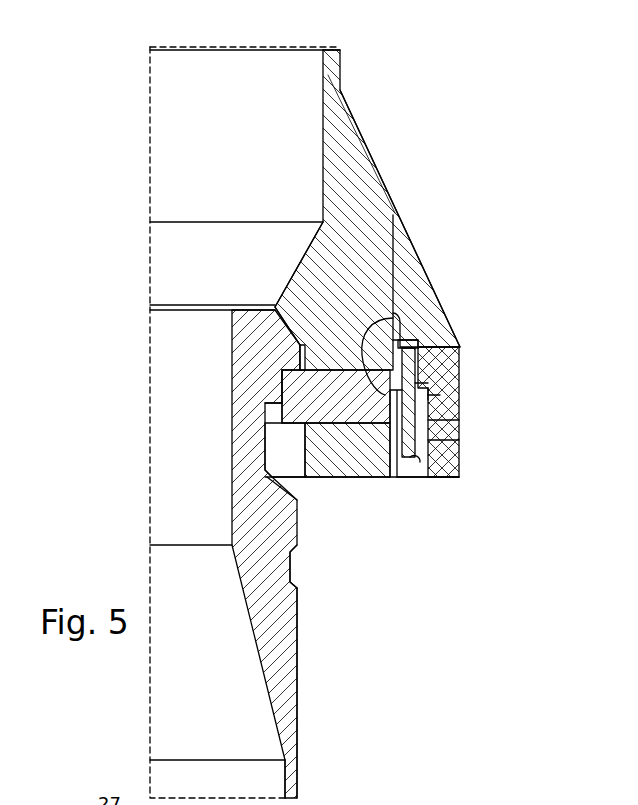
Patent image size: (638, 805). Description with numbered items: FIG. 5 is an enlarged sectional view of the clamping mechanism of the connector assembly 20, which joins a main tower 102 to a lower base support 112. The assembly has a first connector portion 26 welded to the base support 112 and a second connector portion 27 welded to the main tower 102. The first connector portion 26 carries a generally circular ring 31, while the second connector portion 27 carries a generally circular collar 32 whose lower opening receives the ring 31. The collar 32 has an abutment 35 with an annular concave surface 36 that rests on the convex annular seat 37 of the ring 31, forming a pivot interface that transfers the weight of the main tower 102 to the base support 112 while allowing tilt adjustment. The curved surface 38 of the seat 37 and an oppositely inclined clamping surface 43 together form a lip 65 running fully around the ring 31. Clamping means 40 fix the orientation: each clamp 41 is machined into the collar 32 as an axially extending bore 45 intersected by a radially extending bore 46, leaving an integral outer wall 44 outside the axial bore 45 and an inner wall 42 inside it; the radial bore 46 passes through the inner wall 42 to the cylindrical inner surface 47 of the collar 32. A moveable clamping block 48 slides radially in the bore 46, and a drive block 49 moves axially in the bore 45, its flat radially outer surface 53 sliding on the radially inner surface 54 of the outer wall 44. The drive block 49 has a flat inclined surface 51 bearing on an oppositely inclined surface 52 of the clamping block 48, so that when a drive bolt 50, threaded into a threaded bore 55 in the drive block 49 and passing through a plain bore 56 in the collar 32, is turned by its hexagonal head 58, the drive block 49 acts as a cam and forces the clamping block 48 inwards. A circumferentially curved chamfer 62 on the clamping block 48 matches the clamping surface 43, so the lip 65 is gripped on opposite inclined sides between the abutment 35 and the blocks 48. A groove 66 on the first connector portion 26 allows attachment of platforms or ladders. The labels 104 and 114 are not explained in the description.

The connector assembly 20 is at (441, 107).
The first connector portion 26 is at (301, 618).
The second connector portion 27 is at (381, 155).
The ring 31 is at (268, 517).
The collar 32 is at (368, 230).
The abutment 35 is at (294, 312).
The annular concave surface 36 is at (306, 323).
The annular seat 37 is at (272, 328).
The curved surface 38 is at (288, 353).
The clamping means 40 is at (463, 368).
The clamp 41 is at (438, 404).
The inner wall 42 is at (362, 372).
The clamping surface 43 is at (290, 408).
The outer wall 44 is at (450, 446).
The axially extending bore 45 is at (446, 426).
The radially extending bore 46 is at (406, 446).
The cylindrical inner surface 47 is at (266, 462).
The moveable clamping block 48 is at (303, 438).
The drive block 49 is at (426, 383).
The drive bolt 50 is at (416, 446).
The flat inclined surface 51 is at (450, 372).
The oppositely inclined surface 52 is at (397, 330).
The flat radially outer surface 53 is at (436, 395).
The radially inner surface 54 is at (424, 478).
The threaded bore 55 is at (458, 348).
The plain bore 56 is at (416, 344).
The hexagonal head 58 is at (432, 354).
The chamfer 62 is at (292, 459).
The lip 65 is at (281, 388).
The groove 66 is at (292, 568).
The main tower 102 is at (344, 61).
The inner surface 104 is at (330, 74).
The lower base support 112 is at (291, 780).
The end face 114 is at (303, 760).